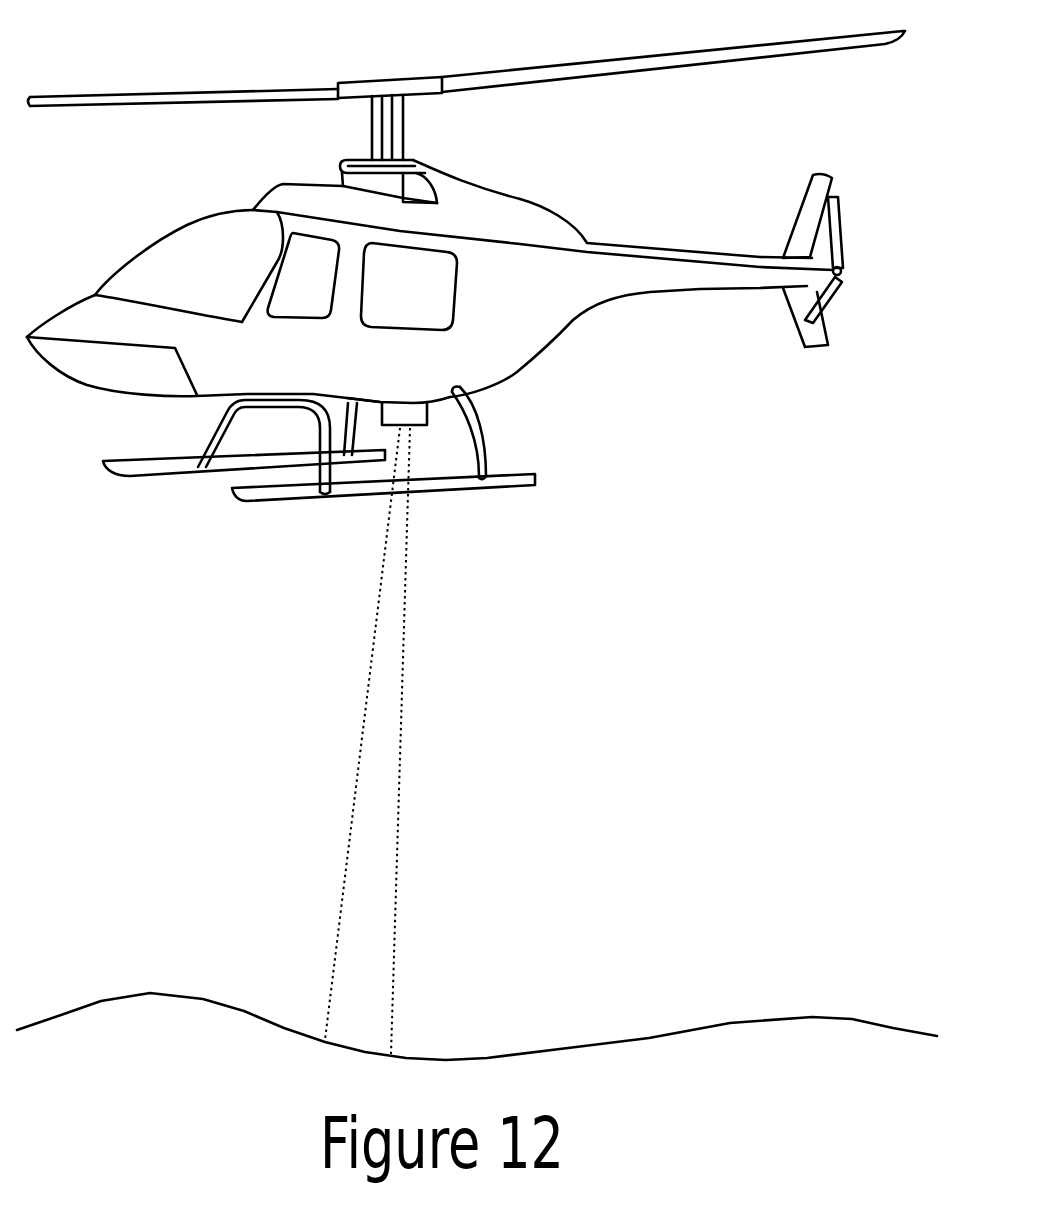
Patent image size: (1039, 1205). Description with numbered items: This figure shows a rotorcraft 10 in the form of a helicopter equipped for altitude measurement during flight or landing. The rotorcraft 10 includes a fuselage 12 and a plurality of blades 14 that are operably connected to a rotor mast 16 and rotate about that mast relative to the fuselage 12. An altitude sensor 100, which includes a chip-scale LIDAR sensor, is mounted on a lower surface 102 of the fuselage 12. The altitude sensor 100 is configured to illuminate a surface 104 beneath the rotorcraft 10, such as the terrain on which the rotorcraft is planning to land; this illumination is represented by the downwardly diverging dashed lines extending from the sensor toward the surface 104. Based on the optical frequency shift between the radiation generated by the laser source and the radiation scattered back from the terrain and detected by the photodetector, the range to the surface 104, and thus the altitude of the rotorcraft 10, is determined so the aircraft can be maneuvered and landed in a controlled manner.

The rotorcraft 10 is at (466, 530).
The fuselage 12 is at (497, 362).
The blades 14 is at (582, 64).
The rotor mast 16 is at (395, 140).
The altitude sensor 100 is at (418, 410).
The lower surface 102 is at (366, 400).
The surface 104 is at (588, 1046).